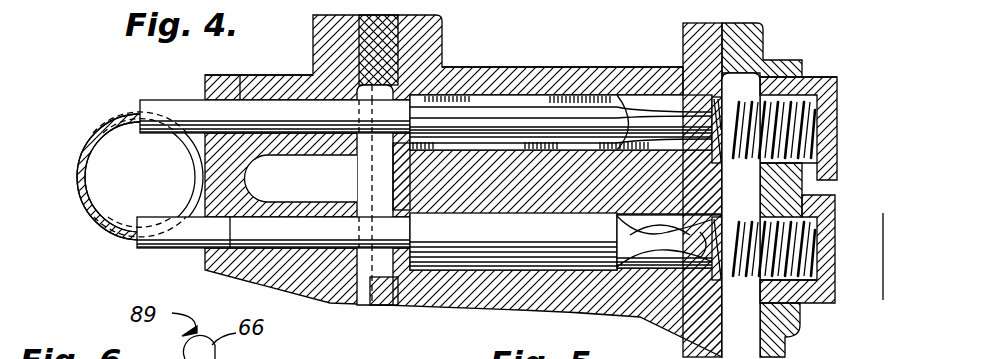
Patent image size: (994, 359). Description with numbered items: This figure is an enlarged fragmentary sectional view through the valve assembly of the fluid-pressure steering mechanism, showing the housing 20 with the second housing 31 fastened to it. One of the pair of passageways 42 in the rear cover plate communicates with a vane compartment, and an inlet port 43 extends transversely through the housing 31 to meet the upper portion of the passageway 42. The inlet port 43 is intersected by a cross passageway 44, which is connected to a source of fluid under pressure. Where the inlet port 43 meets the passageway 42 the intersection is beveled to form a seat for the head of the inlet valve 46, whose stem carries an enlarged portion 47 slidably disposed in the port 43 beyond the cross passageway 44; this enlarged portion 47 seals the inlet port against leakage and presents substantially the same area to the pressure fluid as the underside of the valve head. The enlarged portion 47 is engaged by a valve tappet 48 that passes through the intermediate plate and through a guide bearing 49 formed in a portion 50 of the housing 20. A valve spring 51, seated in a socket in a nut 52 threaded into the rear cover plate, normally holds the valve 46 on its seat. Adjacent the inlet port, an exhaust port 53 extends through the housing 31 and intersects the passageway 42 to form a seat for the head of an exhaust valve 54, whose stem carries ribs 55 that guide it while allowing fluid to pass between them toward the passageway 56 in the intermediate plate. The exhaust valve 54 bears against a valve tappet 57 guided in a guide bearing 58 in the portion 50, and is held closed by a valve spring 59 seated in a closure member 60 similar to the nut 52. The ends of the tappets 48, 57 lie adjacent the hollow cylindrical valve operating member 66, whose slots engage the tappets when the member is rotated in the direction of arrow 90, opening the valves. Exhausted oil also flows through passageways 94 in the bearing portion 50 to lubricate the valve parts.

The housing 20 is at (383, 17).
The second housing 31 is at (480, 68).
The passageway 42 is at (747, 80).
The inlet port 43 is at (683, 267).
The cross passageway 44 is at (640, 272).
The valve 46 is at (725, 213).
The enlarged portion 47 is at (457, 247).
The valve tappet 48 is at (173, 247).
The guide bearing 49 is at (252, 248).
The portion of the housing 50 is at (225, 78).
The valve spring 51 is at (812, 245).
The nut 52 is at (820, 292).
The exhaust port 53 is at (648, 98).
The exhaust valve 54 is at (707, 113).
The ribs 55 is at (527, 100).
The passageway 56 is at (363, 287).
The valve tappet 57 is at (152, 99).
The guide bearing 58 is at (235, 104).
The valve spring 59 is at (818, 85).
The closure member 60 is at (838, 120).
The valve operating member 66 is at (82, 155).
The arrow 90 is at (95, 110).
The passageways 94 is at (248, 182).